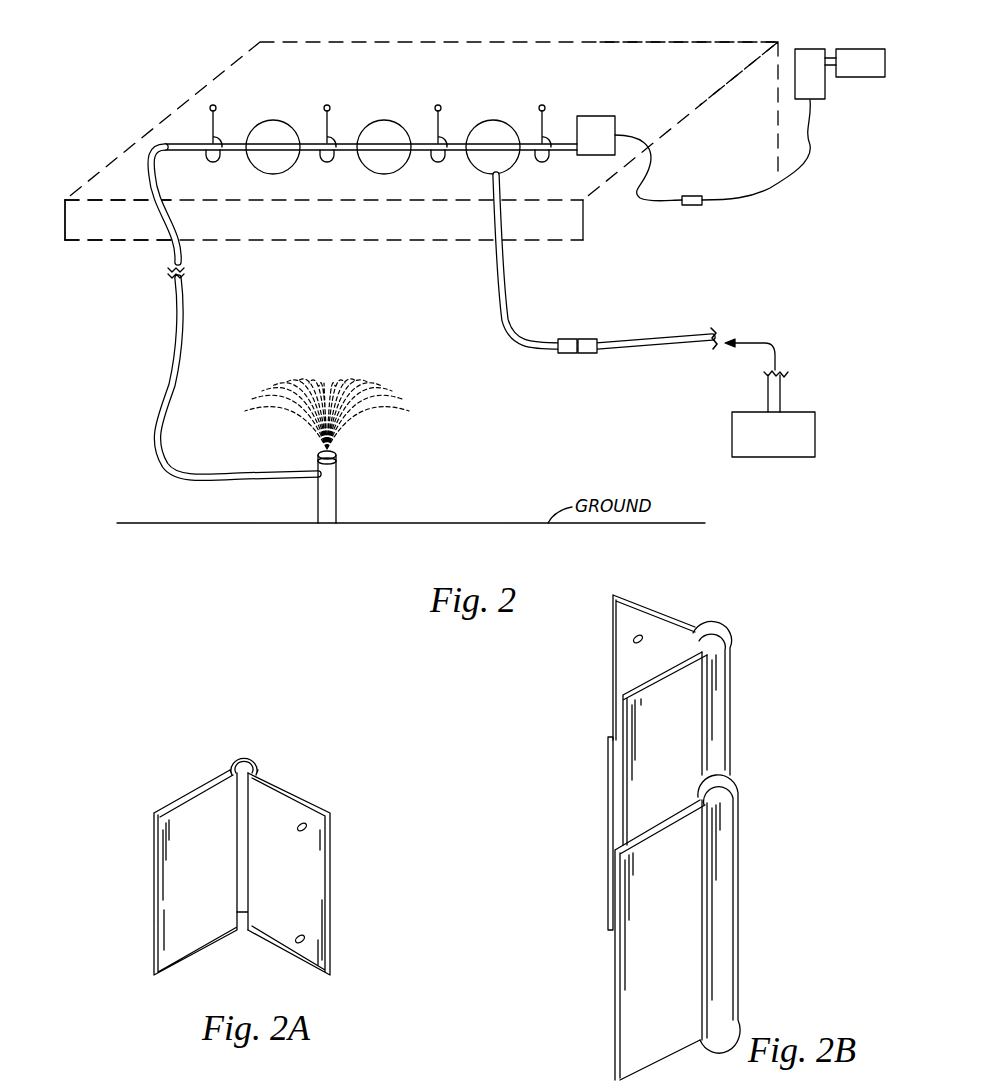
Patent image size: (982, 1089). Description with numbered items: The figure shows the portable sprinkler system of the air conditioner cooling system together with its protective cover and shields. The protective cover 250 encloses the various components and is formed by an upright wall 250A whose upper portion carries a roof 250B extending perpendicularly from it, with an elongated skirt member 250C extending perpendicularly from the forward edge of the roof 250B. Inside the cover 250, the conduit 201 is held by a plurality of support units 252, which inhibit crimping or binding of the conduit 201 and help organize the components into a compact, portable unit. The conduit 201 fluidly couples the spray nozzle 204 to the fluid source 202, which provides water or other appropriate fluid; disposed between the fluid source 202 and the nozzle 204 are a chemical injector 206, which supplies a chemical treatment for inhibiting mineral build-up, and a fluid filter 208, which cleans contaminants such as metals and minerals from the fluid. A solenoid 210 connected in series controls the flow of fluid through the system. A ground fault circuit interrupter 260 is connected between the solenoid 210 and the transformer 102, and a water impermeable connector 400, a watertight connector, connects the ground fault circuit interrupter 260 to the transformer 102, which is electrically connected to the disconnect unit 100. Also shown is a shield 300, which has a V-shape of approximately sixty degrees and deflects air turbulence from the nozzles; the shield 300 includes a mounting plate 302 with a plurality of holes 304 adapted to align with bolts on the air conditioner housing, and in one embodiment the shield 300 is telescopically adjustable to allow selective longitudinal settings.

In FIG. 2, the disconnect unit 100 is at (850, 49).
In FIG. 2, the transformer 102 is at (827, 97).
In FIG. 2, the conduit 201 is at (177, 326).
In FIG. 2, the fluid source 202 is at (755, 457).
In FIG. 2, the spray nozzle 204 is at (336, 496).
In FIG. 2, the chemical injector 206 is at (273, 175).
In FIG. 2, the fluid filter 208 is at (375, 172).
In FIG. 2, the solenoid 210 is at (470, 170).
In FIG. 2, the protective cover 250 is at (232, 86).
In FIG. 2, the upright wall 250A is at (778, 147).
In FIG. 2, the roof 250B is at (688, 57).
In FIG. 2, the elongated skirt member 250C is at (125, 225).
In FIG. 2, the support unit 252 is at (327, 110).
In FIG. 2, the ground fault circuit interrupter 260 is at (595, 116).
In FIG. 2A, the shield 300 is at (261, 879).
In FIG. 2B, the shield 300 is at (733, 627).
In FIG. 2A, the mounting plate 302 is at (333, 885).
In FIG. 2A, the hole 304 is at (303, 821).
In FIG. 2, the water impermeable connector 400 is at (697, 206).